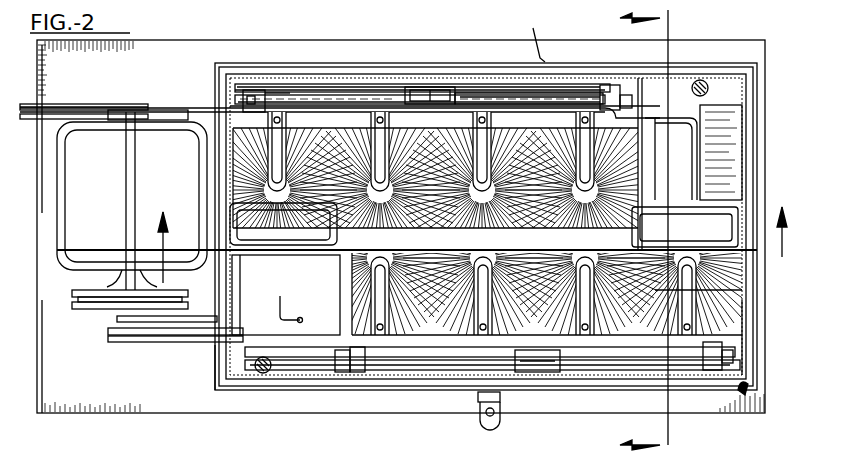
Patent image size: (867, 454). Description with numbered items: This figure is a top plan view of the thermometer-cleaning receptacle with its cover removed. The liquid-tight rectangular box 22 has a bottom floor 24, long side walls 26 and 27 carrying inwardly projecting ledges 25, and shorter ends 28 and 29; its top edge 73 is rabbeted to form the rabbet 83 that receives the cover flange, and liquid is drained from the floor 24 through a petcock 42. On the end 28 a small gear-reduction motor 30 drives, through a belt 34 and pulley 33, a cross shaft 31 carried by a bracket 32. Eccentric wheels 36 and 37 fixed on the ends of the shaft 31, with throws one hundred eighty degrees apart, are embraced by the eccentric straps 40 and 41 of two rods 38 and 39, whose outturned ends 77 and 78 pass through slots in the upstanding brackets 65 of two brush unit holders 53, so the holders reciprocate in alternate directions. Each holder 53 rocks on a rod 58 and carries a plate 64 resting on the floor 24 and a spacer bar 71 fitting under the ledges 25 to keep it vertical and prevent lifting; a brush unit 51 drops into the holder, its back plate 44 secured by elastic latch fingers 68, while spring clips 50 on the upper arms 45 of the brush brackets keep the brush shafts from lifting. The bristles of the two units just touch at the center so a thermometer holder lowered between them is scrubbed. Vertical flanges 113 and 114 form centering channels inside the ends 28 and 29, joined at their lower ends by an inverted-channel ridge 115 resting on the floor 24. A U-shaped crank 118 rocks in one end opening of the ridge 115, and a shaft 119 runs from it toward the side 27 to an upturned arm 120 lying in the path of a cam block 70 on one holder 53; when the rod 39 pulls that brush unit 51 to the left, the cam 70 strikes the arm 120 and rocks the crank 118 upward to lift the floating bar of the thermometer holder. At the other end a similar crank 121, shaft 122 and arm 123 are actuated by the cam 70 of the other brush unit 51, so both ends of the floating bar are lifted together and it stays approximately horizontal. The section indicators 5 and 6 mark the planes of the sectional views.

The rectangular box 22 is at (343, 62).
The bottom floor 24 is at (740, 165).
The ledge 25 is at (384, 82).
The side wall 26 is at (288, 68).
The side wall 27 is at (262, 404).
The end 28 is at (217, 362).
The end 29 is at (745, 362).
The motor 30 is at (75, 190).
The cross shaft 31 is at (126, 226).
The bracket 32 is at (160, 124).
The pulley 33 is at (75, 292).
The belt 34 is at (72, 306).
The eccentric wheel 36 is at (56, 108).
The eccentric wheel 37 is at (128, 336).
The rod 38 is at (196, 110).
The rod 39 is at (420, 335).
The eccentric strap 40 is at (98, 108).
The eccentric strap 41 is at (165, 342).
The petcock 42 is at (498, 425).
The back plate 44 is at (495, 96).
The top arm 45 is at (730, 310).
The clip 50 is at (590, 358).
The brush unit 51 is at (404, 100).
The brush unit holder 53 is at (565, 93).
The rod 58 is at (704, 92).
The plate 64 is at (338, 128).
The bracket 65 is at (418, 88).
The latch finger 68 is at (248, 100).
The cam block 70 is at (630, 96).
The spacer bar 71 is at (360, 86).
The top edge 73 is at (256, 92).
The outturned end 77 is at (540, 372).
The outturned end 78 is at (440, 90).
The rabbet 83 is at (542, 60).
The vertical flange 113 is at (238, 240).
The vertical flange 114 is at (743, 255).
The ridge 115 is at (482, 208).
The U-shaped crank 118 is at (320, 232).
The shaft 119 is at (278, 312).
The upturned arm 120 is at (300, 322).
The crank 121 is at (650, 215).
The shaft 122 is at (690, 150).
The arm 123 is at (672, 118).
The section line 5 is at (658, 230).
The section line 6 is at (472, 226).